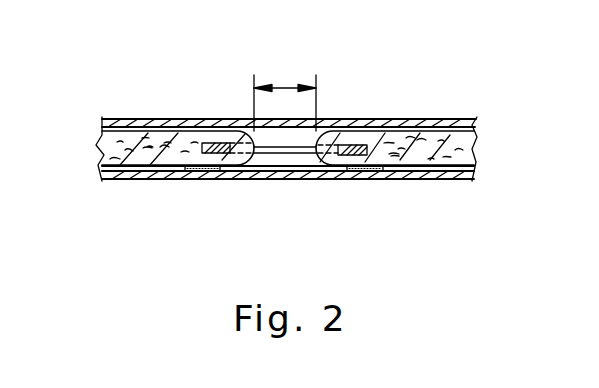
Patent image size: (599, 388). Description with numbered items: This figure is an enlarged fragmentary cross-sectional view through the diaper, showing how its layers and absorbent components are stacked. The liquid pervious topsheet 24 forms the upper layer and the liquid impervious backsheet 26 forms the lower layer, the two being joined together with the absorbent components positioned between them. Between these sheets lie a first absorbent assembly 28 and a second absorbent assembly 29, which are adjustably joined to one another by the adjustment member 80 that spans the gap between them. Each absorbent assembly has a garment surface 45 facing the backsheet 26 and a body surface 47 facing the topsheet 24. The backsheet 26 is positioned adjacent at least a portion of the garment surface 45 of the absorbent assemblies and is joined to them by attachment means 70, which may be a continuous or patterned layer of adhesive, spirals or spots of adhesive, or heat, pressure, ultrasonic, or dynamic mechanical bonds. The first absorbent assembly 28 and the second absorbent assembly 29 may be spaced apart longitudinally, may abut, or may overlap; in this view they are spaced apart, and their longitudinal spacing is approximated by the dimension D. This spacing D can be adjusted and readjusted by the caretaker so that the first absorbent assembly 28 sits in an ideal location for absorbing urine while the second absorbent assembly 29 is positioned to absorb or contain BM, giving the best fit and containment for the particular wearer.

The topsheet 24 is at (132, 125).
The backsheet 26 is at (378, 181).
The first absorbent assembly 28 is at (175, 162).
The second absorbent assembly 29 is at (397, 140).
The garment surface 45 is at (121, 180).
The body surface 47 is at (217, 125).
The attachment means 70 is at (205, 172).
The adjustment member 80 is at (290, 154).
The longitudinal spacing D is at (283, 87).